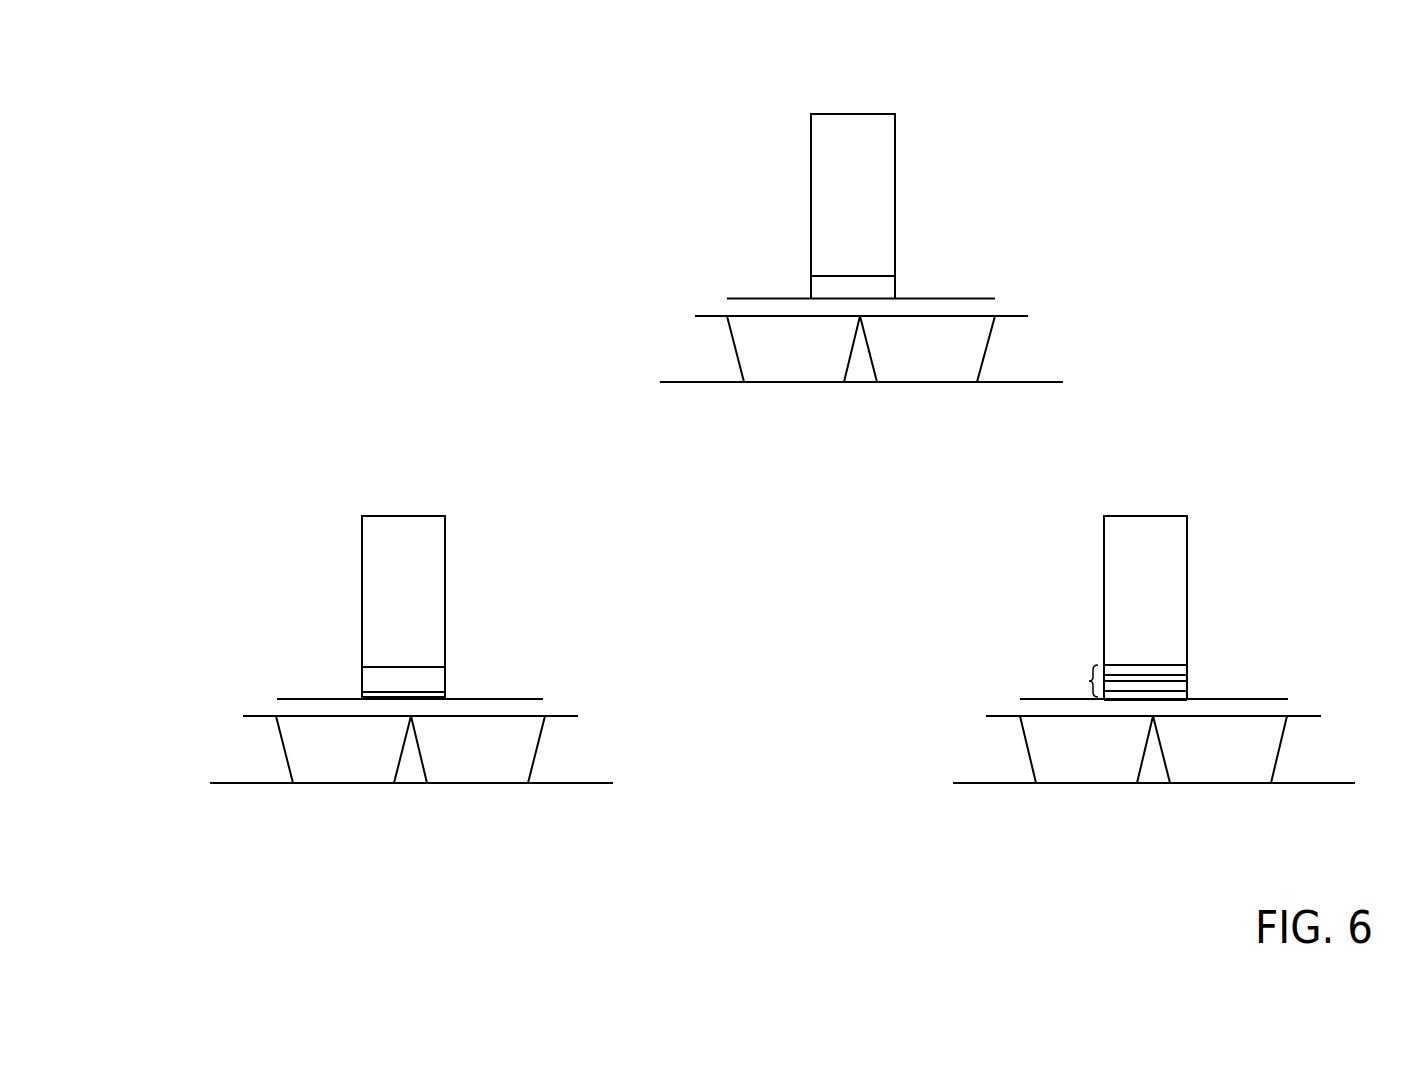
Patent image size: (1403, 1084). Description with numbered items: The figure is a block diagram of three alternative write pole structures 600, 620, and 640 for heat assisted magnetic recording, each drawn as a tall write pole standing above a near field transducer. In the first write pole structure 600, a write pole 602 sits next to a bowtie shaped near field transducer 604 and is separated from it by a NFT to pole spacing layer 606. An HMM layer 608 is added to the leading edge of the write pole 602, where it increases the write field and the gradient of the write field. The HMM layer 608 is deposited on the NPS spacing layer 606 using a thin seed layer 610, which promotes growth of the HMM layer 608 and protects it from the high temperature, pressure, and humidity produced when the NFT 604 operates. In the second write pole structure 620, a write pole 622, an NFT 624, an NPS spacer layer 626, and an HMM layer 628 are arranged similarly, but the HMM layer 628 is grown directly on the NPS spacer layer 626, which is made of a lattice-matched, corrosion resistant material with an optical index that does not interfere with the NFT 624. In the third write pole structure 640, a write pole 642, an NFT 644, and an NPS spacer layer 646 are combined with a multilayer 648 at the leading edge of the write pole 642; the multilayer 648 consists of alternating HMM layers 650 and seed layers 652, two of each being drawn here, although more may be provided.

The write pole structure 600 is at (242, 900).
The write pole 602 is at (340, 565).
The near field transducer 604 is at (277, 748).
The NPS spacing layer 606 is at (277, 703).
The HMM layer 608 is at (377, 682).
The seed layer 610 is at (428, 693).
The write pole structure 620 is at (610, 130).
The write pole 622 is at (795, 163).
The NFT 624 is at (727, 345).
The NPS spacer layer 626 is at (727, 302).
The HMM layer 628 is at (828, 285).
The write pole structure 640 is at (1128, 858).
The write pole 642 is at (1085, 565).
The NFT 644 is at (1008, 750).
The NPS spacer layer 646 is at (1020, 706).
The multilayer 648 is at (1078, 675).
The HMM layer 650 is at (1185, 672).
The seed layer 652 is at (1188, 680).